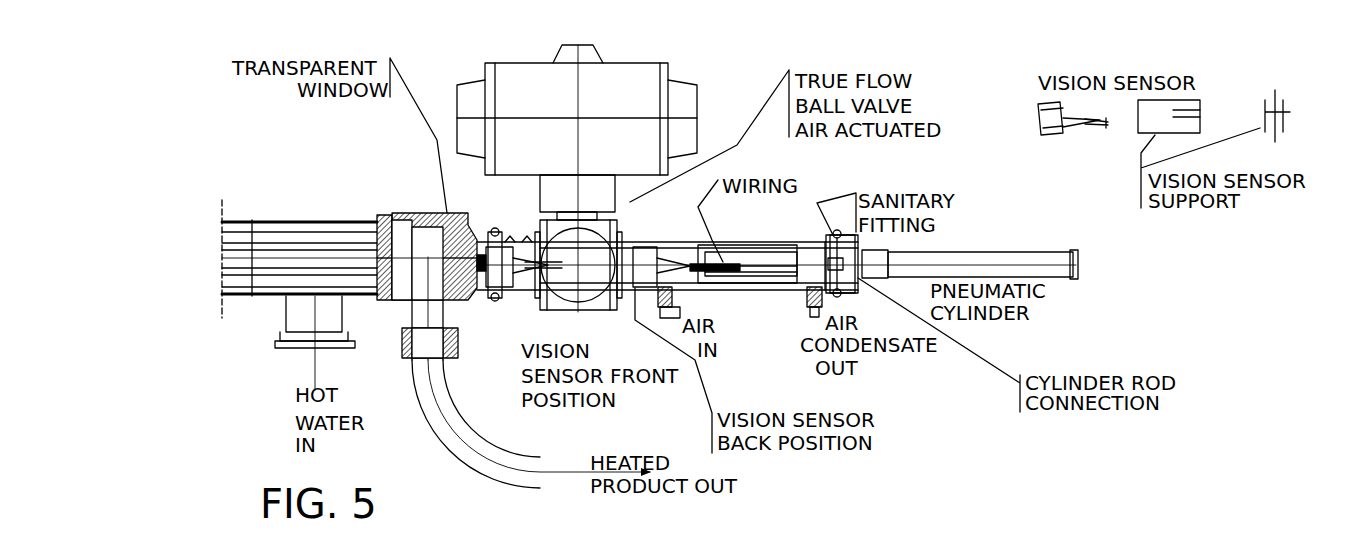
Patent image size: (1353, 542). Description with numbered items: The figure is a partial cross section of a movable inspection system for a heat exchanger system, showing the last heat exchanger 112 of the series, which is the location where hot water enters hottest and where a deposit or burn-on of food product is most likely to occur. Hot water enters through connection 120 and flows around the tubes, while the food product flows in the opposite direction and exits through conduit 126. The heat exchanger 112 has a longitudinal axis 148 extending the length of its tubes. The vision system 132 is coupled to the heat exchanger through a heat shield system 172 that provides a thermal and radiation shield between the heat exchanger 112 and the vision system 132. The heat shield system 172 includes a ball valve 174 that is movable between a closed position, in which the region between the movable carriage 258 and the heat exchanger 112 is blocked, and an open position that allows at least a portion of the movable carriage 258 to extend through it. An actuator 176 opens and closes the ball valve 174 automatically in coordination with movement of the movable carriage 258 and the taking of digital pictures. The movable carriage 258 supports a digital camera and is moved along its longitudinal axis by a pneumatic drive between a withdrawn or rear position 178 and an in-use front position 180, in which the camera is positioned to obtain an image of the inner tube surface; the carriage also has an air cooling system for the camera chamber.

The fourth heat exchanger 112 is at (245, 193).
The connection 120 is at (312, 305).
The conduit 126 is at (478, 430).
The automatic optical/electronic photographic system 132 is at (1075, 134).
The longitudinal axis 148 is at (397, 215).
The heat shield system 172 is at (700, 62).
The ball valve 174 is at (597, 238).
The actuator 176 is at (508, 92).
The withdrawn position 178 is at (698, 288).
The in-use position 180 is at (485, 298).
The movable carriage 258 is at (773, 240).